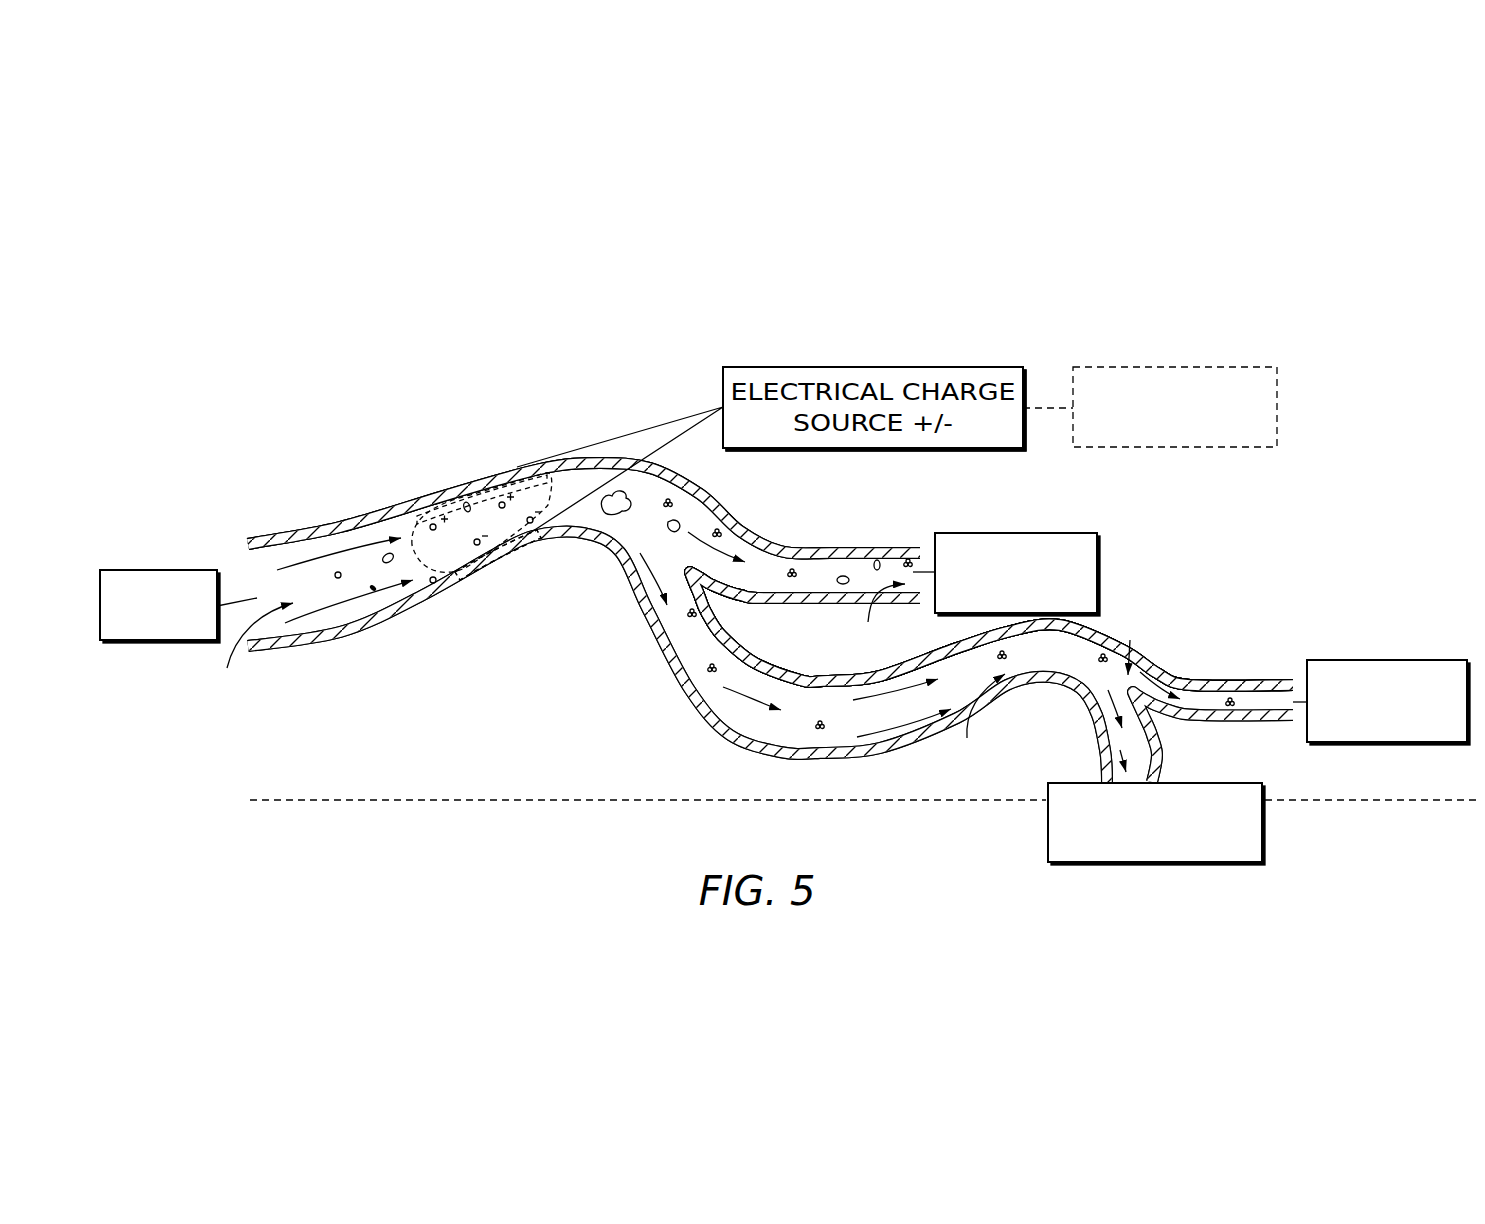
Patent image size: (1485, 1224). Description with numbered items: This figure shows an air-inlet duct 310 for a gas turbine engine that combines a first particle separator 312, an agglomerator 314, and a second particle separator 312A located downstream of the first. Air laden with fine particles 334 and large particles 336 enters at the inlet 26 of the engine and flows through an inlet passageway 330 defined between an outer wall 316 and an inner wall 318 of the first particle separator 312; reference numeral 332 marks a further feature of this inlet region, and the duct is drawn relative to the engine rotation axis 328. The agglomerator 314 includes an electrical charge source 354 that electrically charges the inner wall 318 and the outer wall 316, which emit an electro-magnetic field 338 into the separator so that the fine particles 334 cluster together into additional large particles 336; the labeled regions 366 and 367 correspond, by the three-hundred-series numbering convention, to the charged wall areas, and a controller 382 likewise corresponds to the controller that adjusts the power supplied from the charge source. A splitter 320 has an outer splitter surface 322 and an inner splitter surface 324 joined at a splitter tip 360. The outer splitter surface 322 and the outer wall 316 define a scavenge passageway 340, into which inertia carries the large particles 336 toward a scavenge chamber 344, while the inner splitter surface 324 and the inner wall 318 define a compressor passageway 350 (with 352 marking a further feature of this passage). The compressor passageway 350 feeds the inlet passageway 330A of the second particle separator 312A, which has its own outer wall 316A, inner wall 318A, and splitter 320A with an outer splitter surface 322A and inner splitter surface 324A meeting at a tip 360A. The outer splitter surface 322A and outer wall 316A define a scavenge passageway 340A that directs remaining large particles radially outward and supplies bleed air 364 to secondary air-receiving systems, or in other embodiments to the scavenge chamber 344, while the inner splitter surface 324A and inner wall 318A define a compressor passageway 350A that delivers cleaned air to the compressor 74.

The inlet 26 is at (158, 570).
The compressor 74 is at (1155, 862).
The air-inlet duct 310 is at (660, 313).
The first particle separator 312 is at (705, 478).
The second particle separator 312A is at (1128, 620).
The agglomerator 314 is at (854, 350).
The outer wall 316 is at (334, 524).
The outer wall 316A is at (1110, 627).
The inner wall 318 is at (419, 618).
The inner wall 318A is at (843, 760).
The splitter 320 is at (711, 593).
The splitter 320A is at (1160, 720).
The outer splitter surface 322 is at (738, 542).
The outer splitter surface 322A is at (1152, 665).
The inner splitter surface 324 is at (687, 589).
The inner splitter surface 324A is at (1152, 745).
The engine centerline 328 is at (270, 800).
The inlet passageway 330 is at (249, 653).
The inlet passageway 330A is at (971, 723).
The flow passage 332 is at (338, 618).
The fine particles 334 is at (502, 502).
The large particles 336 is at (614, 514).
The electro-magnetic field 338 is at (548, 497).
The scavenge passageway 340 is at (796, 594).
The scavenge passageway 340A is at (1268, 702).
The scavenge chamber 344 is at (1017, 533).
The compressor passageway 350 is at (694, 684).
The compressor passageway 350A is at (1098, 747).
The core flow passage 352 is at (744, 699).
The electrical charge source 354 is at (950, 367).
The splitter tip 360 is at (703, 503).
The second splitter 360A is at (1130, 628).
The bleed air 364 is at (1397, 660).
The charging electrode 366 is at (480, 598).
The ionization zone 367 is at (437, 480).
The controller 382 is at (1205, 367).